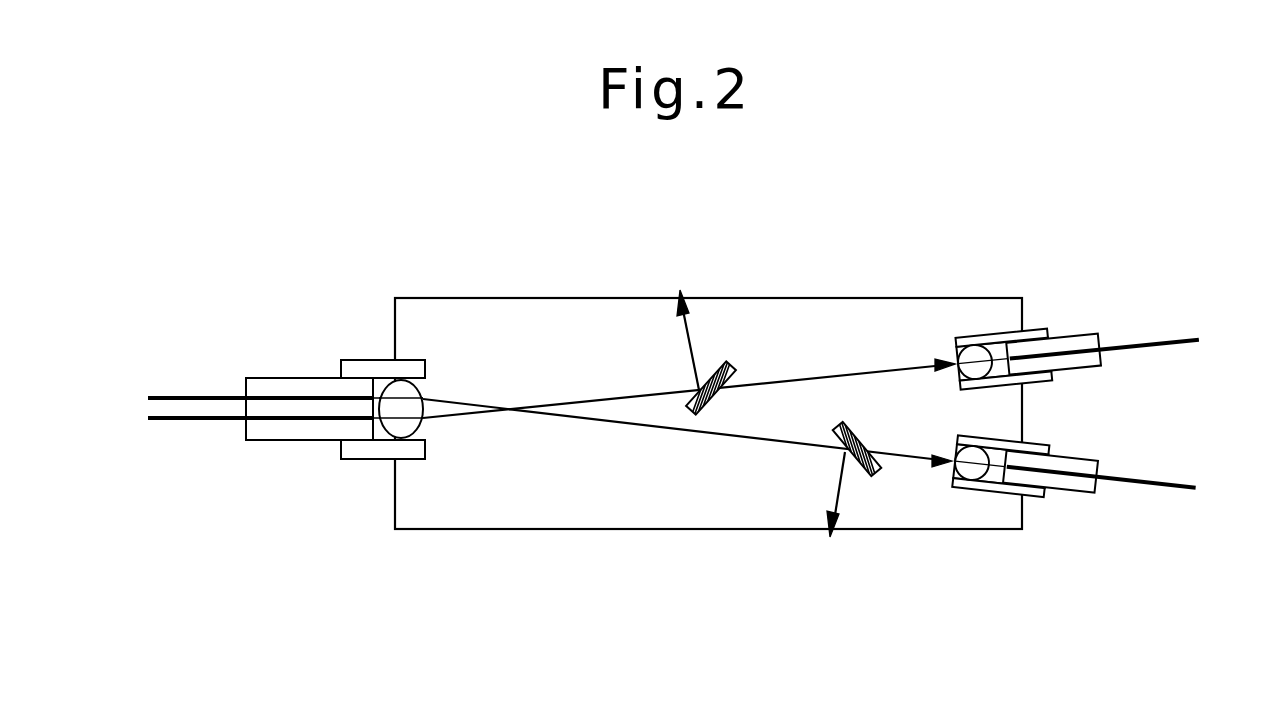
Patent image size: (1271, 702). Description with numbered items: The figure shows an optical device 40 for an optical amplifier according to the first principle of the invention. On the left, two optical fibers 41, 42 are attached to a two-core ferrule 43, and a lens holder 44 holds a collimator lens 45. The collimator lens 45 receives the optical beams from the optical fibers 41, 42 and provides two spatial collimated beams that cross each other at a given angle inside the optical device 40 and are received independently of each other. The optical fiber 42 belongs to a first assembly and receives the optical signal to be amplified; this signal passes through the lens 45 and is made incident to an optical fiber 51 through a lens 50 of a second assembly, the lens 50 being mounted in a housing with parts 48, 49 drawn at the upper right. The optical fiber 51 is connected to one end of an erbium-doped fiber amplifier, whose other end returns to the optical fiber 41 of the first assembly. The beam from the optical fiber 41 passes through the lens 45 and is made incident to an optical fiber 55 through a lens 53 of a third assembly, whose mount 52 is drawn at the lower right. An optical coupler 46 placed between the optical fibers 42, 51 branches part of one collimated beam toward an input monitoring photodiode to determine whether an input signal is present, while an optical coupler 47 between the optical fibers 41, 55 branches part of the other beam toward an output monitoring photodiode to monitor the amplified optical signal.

The optical device 40 is at (923, 297).
The optical fiber 41 is at (184, 393).
The optical fiber 42 is at (182, 421).
The two-core ferrule 43 is at (291, 378).
The lens holder 44 is at (369, 360).
The collimator lens 45 is at (425, 392).
The optical coupler 46 is at (728, 360).
The optical coupler 47 is at (838, 428).
The ferrule 48 is at (1092, 337).
The holder 49 is at (1036, 330).
The lens 50 is at (956, 370).
The optical fiber 51 is at (1176, 337).
The holder 52 is at (1036, 497).
The lens 53 is at (957, 458).
The optical fiber 55 is at (1166, 492).